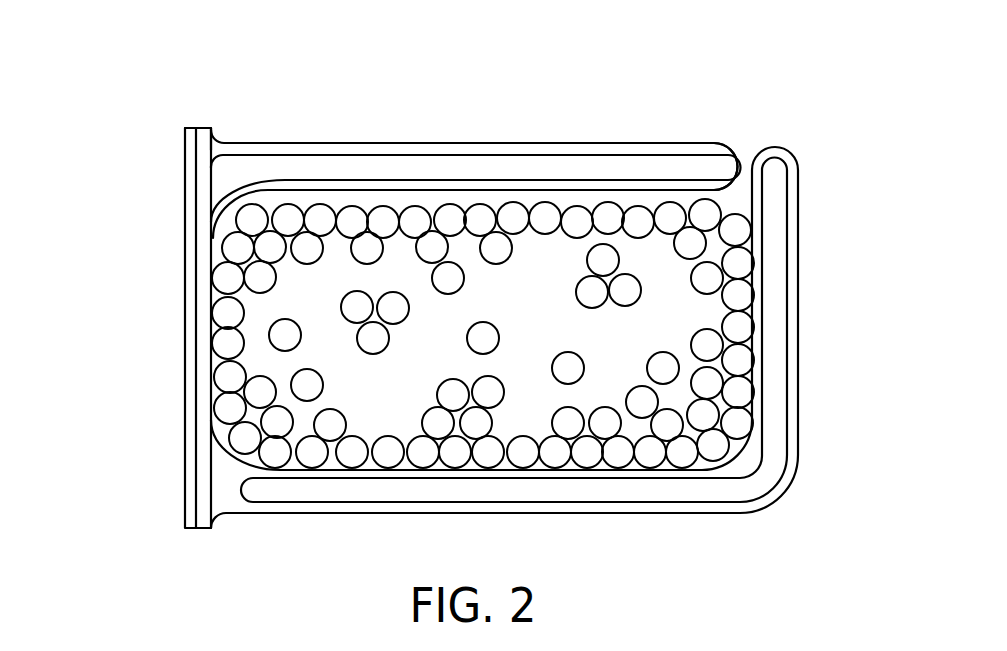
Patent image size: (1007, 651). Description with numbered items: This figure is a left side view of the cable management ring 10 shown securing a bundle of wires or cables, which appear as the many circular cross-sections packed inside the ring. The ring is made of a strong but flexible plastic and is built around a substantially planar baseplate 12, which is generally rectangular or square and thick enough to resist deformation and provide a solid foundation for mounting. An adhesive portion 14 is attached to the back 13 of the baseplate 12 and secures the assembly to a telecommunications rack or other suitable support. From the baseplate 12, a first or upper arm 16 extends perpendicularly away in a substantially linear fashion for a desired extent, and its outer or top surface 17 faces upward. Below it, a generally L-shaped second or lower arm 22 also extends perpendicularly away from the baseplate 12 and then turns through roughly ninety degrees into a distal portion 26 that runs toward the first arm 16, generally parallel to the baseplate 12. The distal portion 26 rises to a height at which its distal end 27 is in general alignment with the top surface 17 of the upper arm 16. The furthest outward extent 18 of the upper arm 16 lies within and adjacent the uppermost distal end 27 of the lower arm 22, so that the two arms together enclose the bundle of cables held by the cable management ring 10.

The cable management ring 10 is at (518, 130).
The baseplate 12 is at (211, 128).
The back of the baseplate 13 is at (195, 172).
The adhesive portion 14 is at (185, 326).
The first arm 16 is at (456, 143).
The top surface of first arm 17 is at (630, 143).
The furthest outward extent of the upper arm 18 is at (738, 162).
The second arm 22 is at (542, 516).
The distal portion 26 is at (797, 266).
The distal end 27 is at (773, 147).